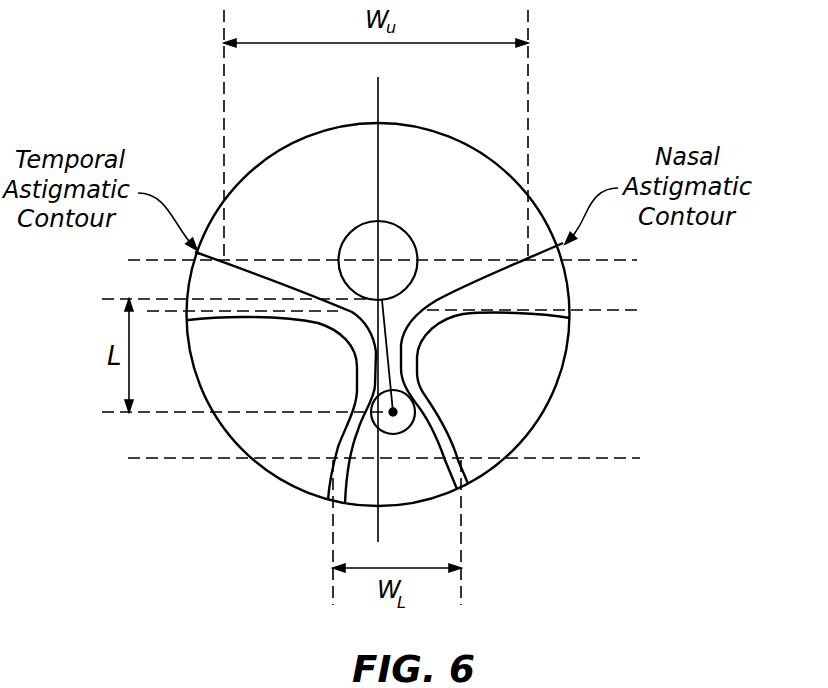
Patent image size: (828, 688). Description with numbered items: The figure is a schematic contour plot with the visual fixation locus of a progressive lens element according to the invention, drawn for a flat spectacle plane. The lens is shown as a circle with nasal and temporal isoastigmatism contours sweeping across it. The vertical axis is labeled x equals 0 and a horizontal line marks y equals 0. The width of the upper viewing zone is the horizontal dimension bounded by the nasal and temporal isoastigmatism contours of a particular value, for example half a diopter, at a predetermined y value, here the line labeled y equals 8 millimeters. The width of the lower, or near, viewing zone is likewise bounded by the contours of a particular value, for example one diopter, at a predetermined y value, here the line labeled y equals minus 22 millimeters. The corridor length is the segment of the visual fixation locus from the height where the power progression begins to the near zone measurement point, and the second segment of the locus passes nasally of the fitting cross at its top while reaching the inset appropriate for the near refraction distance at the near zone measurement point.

The origin axes (x=0 center line, y=0 line) 0 is at (535, 302).
The y=8mm reference line (upper contour level) 8 is at (435, 255).
The y=-22mm reference line (lower contour level) 22 is at (451, 458).